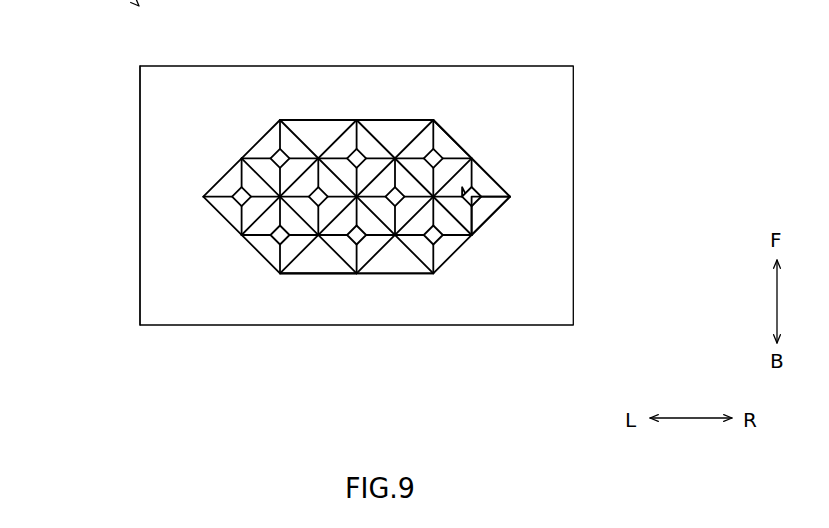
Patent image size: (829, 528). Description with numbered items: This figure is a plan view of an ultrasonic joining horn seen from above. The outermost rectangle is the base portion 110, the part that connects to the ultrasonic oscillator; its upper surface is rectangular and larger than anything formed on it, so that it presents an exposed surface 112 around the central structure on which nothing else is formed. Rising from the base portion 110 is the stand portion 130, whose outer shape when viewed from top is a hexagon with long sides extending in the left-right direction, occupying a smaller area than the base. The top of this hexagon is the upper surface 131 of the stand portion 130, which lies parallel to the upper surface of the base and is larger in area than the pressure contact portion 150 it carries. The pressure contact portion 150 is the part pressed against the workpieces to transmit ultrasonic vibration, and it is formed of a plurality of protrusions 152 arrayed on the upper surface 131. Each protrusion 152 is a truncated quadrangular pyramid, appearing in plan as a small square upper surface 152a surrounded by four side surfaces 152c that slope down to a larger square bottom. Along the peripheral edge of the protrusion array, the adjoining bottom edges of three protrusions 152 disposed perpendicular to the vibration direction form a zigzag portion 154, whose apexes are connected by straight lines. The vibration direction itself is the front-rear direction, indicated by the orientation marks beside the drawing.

The base portion 110 is at (120, 198).
The exposed surface 112 is at (152, 252).
The stand portion 130 is at (332, 273).
The upper surface of the stand portion 131 is at (305, 267).
The pressure contact portion 150 is at (215, 178).
The protrusion 152 is at (487, 171).
The upper surface of the protrusion 152a is at (481, 192).
The side surface of the protrusion 152c is at (482, 208).
The zigzag portion 154 is at (370, 120).